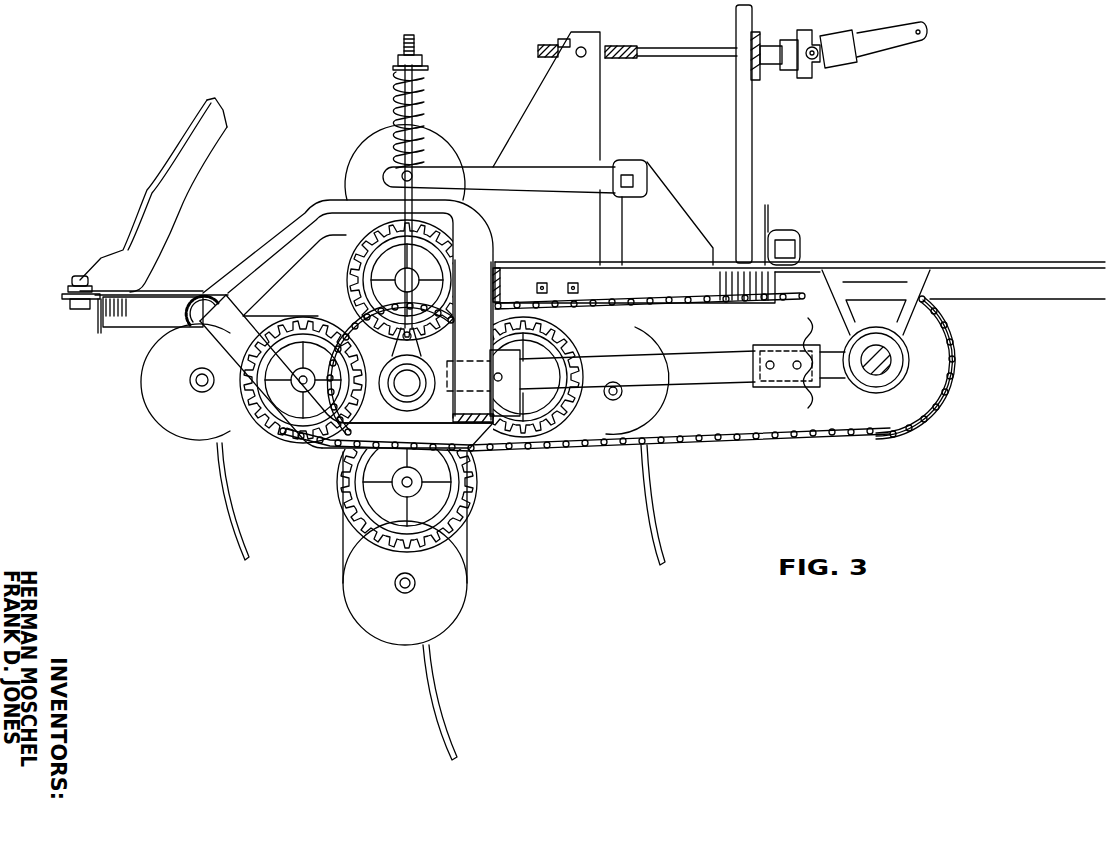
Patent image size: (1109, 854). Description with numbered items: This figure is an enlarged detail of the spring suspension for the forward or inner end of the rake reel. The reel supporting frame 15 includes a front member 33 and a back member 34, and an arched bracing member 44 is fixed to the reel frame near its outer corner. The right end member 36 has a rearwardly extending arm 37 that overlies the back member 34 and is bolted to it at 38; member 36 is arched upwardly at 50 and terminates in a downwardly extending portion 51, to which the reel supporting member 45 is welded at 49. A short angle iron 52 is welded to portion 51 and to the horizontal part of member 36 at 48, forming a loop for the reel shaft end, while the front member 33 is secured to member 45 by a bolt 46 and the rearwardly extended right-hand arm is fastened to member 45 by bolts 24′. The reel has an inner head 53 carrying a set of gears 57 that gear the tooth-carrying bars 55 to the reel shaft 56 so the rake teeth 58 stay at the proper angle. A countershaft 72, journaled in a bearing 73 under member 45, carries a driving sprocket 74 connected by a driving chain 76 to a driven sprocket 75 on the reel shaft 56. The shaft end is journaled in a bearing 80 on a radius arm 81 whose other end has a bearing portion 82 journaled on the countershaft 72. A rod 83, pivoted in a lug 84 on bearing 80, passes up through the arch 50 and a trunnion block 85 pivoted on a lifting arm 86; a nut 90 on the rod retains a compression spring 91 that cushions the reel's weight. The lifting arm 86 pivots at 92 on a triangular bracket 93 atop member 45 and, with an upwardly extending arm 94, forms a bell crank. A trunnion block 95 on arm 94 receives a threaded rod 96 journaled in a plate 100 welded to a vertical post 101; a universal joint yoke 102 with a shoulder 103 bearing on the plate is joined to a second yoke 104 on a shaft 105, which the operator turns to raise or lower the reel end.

The reel supporting frame 15 is at (117, 341).
The bolts 24′ is at (573, 283).
The front member 33 is at (790, 232).
The back member 34 is at (66, 302).
The right end member 36 is at (168, 305).
The rearwardly extending arm 37 is at (70, 289).
The bolt connection 38 is at (77, 282).
The arched bracing member 44 is at (179, 162).
The reel supporting member 45 is at (1025, 296).
The bolt 46 is at (800, 246).
The weld connection 48 is at (193, 328).
The weld connection 49 is at (492, 283).
The arch 50 is at (348, 215).
The downwardly extending portion 51 is at (475, 277).
The angle iron 52 is at (277, 387).
The inner or forward head 53 is at (336, 511).
The tooth-carrying bars 55 is at (190, 380).
The reel shaft 56 is at (415, 404).
The gears 57 is at (346, 280).
The rake teeth 58 is at (222, 522).
The countershaft 72 is at (882, 370).
The bearing 73 is at (912, 334).
The driving sprocket 74 is at (930, 380).
The driven sprocket 75 is at (343, 424).
The driving chain 76 is at (735, 442).
The bearing 80 is at (392, 381).
The radius arm 81 is at (702, 368).
The bearing portion 82 is at (845, 368).
The rod 83 is at (412, 218).
The lug 84 is at (400, 348).
The trunnion block 85 is at (393, 195).
The lifting arm 86 is at (522, 183).
The nut 90 is at (398, 58).
The compression spring 91 is at (396, 112).
The pivot 92 is at (650, 176).
The triangularly shaped bracket 93 is at (668, 218).
The upwardly extending arm 94 is at (582, 114).
The trunnion block 95 is at (566, 40).
The rod 96 is at (662, 48).
The plate 100 is at (764, 44).
The vertical post 101 is at (738, 104).
The universal joint yoke 102 is at (790, 62).
The shoulder 103 is at (760, 72).
The second yoke 104 is at (845, 55).
The shaft 105 is at (906, 38).